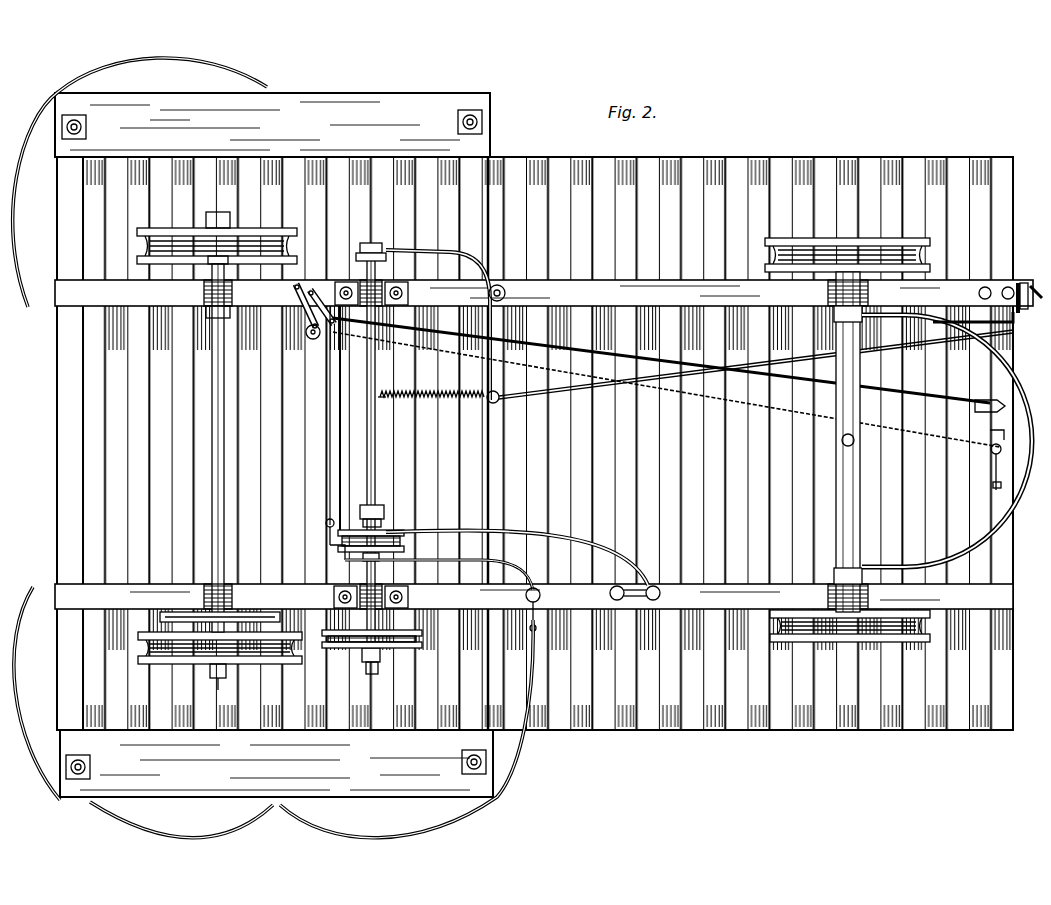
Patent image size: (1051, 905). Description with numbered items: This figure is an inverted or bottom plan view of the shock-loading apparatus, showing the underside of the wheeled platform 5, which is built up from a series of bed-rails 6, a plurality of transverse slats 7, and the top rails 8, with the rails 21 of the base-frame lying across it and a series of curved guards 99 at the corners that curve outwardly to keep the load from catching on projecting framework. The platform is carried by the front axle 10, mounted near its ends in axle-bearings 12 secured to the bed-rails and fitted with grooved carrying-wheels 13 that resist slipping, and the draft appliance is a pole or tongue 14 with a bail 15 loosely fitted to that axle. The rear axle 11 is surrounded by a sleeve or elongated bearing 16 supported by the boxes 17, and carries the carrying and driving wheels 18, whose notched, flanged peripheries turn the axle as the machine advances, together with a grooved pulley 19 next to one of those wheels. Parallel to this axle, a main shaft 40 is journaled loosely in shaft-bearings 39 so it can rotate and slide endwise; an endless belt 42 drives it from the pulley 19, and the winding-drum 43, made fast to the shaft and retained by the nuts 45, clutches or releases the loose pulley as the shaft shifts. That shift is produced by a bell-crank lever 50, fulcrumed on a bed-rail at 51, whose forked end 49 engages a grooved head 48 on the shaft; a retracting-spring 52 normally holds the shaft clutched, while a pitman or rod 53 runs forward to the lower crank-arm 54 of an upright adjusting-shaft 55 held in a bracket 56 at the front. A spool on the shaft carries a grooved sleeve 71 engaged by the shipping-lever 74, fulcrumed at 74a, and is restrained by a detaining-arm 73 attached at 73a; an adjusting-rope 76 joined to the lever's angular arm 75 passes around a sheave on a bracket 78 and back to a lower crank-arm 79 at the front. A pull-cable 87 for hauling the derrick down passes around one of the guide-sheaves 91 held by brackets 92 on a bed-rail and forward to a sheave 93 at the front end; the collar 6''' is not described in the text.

The platform 5 is at (380, 575).
The bed-rails 6 is at (531, 424).
The collar 6''' is at (389, 506).
The transverse slats 7 is at (735, 215).
The top rails 8 is at (574, 165).
The front axle 10 is at (846, 490).
The rear axle 11 is at (212, 260).
The axle-bearings 12 is at (838, 294).
The grooved carrying-wheels 13 is at (847, 238).
The pole or tongue 14 is at (955, 441).
The bail 15 is at (1010, 490).
The sleeve or elongated bearing 16 is at (214, 472).
The boxes 17 is at (178, 330).
The carrying and driving wheels 18 is at (163, 228).
The grooved pulley 19 is at (180, 614).
The rails of the base-frame 21 is at (345, 102).
The shaft-bearings 39 is at (348, 282).
The main shaft 40 is at (375, 450).
The endless belt 42 is at (338, 552).
The winding-drum 43 is at (400, 650).
The nuts 45 is at (376, 668).
The grooved head 48 is at (373, 243).
The forked end 49 is at (385, 253).
The bell-crank lever 50 is at (455, 258).
The fulcrum 51 is at (505, 286).
The retracting-spring 52 is at (424, 400).
The pitman or rod 53 is at (750, 376).
The lower crank-arm 54 is at (1016, 322).
The upright adjusting-shaft 55 is at (1022, 282).
The bracket 56 is at (1034, 284).
The grooved sleeve 71 is at (343, 330).
The detaining-arm 73 is at (450, 530).
The attachment point of detaining-arm 73a is at (652, 584).
The shipping-lever 74 is at (432, 558).
The fulcrum of shipping-lever 74a is at (533, 617).
The angular arm 75 is at (326, 520).
The adjusting-rope 76 is at (340, 415).
The bracket 78 is at (305, 284).
The lower crank-arm 79 is at (1003, 455).
The pull-cable 87 is at (310, 340).
The guide-sheaves 91 is at (318, 345).
The brackets 92 is at (308, 318).
The sheave 93 is at (983, 400).
The curved guards 99 is at (22, 180).